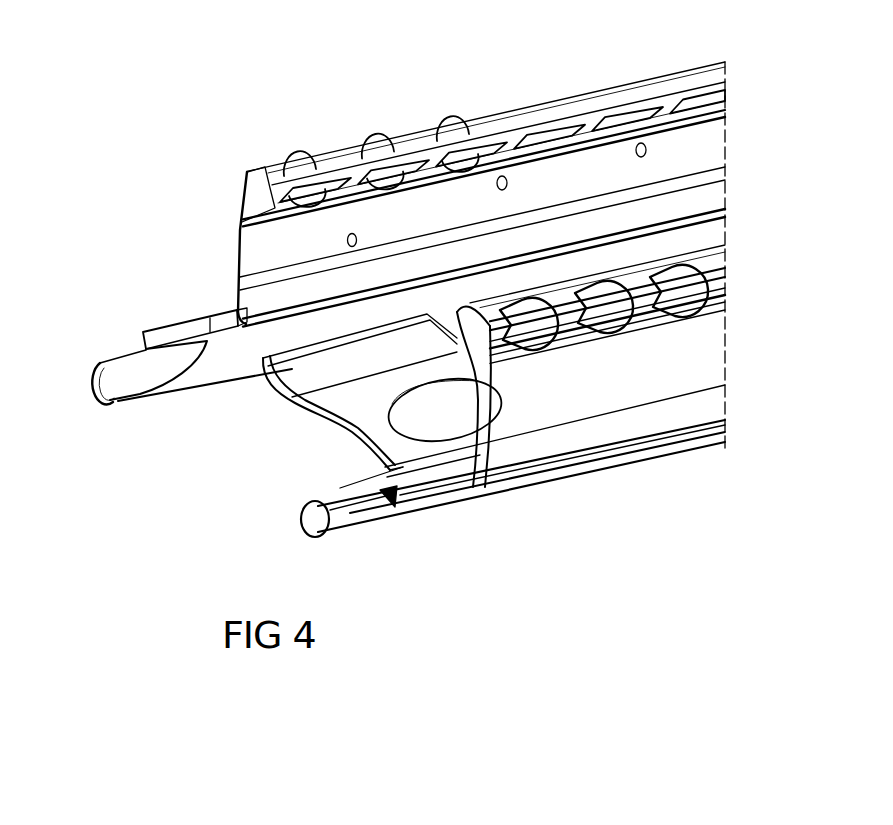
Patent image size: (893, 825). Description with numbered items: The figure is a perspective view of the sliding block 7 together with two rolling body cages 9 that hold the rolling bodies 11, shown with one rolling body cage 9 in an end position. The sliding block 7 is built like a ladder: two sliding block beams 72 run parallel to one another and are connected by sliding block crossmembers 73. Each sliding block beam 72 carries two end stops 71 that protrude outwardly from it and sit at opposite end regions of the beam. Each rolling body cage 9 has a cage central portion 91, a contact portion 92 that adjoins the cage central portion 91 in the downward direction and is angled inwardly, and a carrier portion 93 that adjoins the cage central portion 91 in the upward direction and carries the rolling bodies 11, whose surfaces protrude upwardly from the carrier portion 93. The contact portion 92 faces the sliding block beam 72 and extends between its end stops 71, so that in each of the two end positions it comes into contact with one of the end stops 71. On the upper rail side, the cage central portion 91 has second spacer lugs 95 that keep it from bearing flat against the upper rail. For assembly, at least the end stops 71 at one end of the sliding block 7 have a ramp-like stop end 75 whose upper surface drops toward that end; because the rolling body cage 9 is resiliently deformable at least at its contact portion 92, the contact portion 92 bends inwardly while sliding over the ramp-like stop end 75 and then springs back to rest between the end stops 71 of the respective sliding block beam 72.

The sliding block 7 is at (263, 393).
The rolling body cage 9 is at (565, 88).
The rolling body 11 is at (300, 160).
The end stop 71 is at (212, 316).
The sliding block beam 72 is at (188, 386).
The sliding block crossmember 73 is at (342, 411).
The ramp-like stop end 75 is at (145, 340).
The cage central portion 91 is at (238, 250).
The contact portion 92 is at (257, 302).
The carrier portion 93 is at (252, 190).
The second spacer lug 95 is at (352, 234).